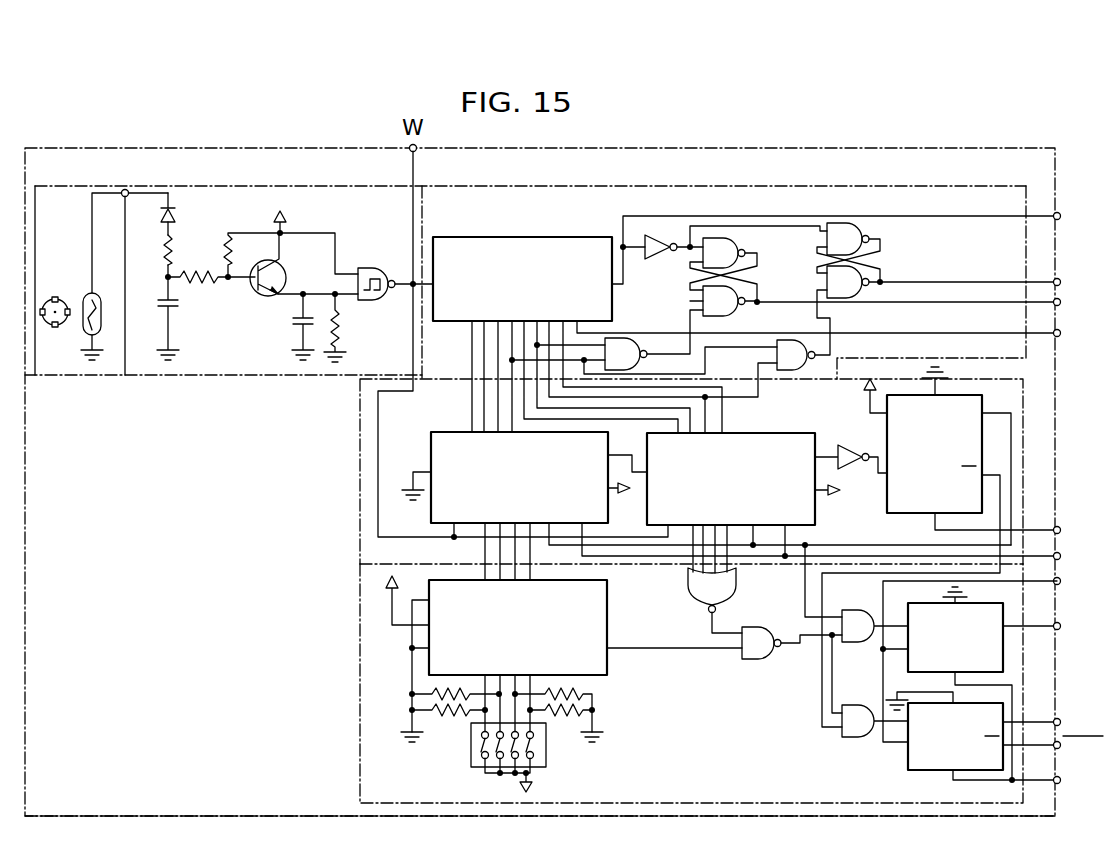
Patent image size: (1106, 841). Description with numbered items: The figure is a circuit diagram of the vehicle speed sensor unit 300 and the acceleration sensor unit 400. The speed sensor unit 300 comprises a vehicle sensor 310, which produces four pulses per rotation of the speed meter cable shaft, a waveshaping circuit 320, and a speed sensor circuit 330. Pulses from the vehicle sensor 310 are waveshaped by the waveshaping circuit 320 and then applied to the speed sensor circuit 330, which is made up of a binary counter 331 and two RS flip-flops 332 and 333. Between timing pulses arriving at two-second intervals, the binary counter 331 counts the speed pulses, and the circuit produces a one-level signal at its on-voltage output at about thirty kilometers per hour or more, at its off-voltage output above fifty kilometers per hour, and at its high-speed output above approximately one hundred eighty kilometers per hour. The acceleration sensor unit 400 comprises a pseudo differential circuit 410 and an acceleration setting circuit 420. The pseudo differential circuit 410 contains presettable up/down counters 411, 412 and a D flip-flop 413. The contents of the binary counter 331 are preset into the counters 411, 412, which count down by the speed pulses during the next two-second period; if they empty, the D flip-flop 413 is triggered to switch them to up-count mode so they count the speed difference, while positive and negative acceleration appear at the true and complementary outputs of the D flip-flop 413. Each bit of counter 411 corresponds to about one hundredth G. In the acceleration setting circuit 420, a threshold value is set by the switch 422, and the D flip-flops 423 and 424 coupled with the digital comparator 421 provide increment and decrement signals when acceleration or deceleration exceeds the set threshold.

The vehicle speed sensor unit 300 is at (932, 148).
The vehicle sensor 310 is at (100, 184).
The waveshaping circuit 320 is at (300, 186).
The speed sensor circuit 330 is at (525, 189).
The binary counter 331 is at (528, 237).
The RS flip-flop 332 is at (717, 237).
The RS flip-flop 333 is at (838, 223).
The acceleration sensor unit 400 is at (895, 816).
The pseudo differential circuit 410 is at (1023, 441).
The presettable up/down counter 411 is at (447, 432).
The presettable up/down counter 412 is at (758, 433).
The D flip-flop 413 is at (955, 394).
The acceleration setting circuit 420 is at (359, 665).
The digital comparator 421 is at (607, 615).
The switch 422 is at (546, 742).
The D flip-flop 423 is at (1003, 647).
The D flip-flop 424 is at (928, 770).